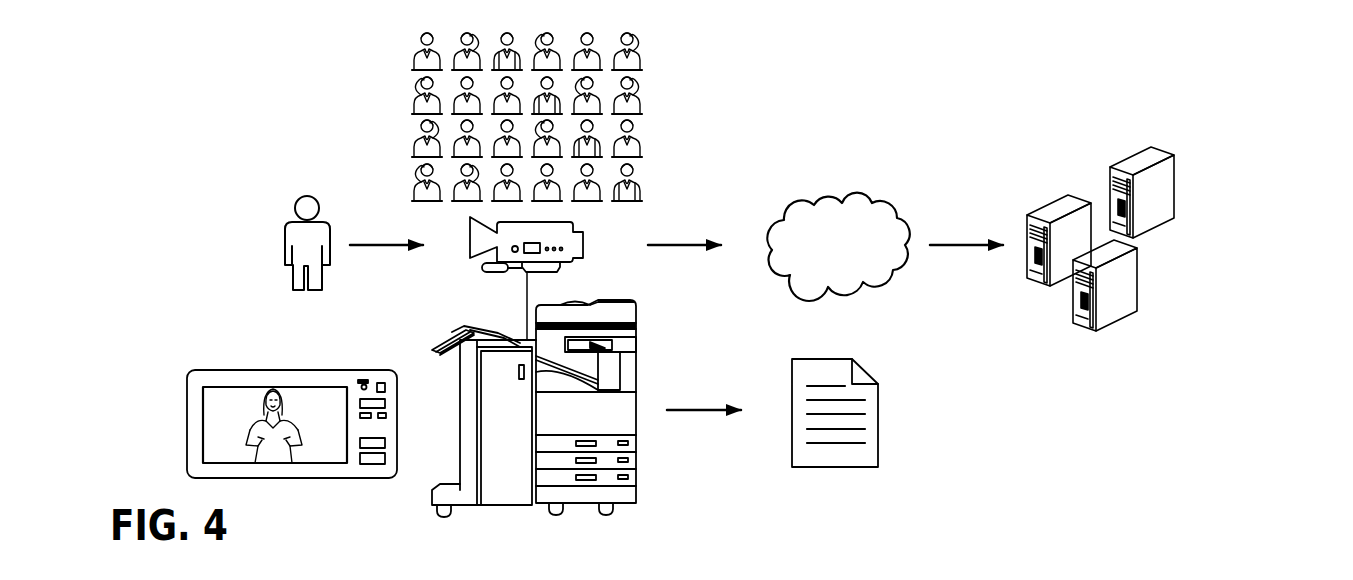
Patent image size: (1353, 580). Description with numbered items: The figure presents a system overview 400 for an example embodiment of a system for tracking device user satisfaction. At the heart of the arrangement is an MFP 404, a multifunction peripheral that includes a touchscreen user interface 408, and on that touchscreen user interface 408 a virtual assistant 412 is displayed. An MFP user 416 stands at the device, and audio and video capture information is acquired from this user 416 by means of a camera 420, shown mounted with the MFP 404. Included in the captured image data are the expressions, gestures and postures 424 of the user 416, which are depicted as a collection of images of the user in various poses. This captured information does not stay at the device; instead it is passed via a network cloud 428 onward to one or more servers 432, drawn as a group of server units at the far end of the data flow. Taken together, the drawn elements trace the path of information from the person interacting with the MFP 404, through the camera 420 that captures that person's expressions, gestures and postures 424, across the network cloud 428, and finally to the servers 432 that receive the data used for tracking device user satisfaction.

The system overview 400 is at (1018, 115).
The MFP 404 is at (500, 505).
The touchscreen user interface 408 is at (337, 470).
The virtual assistant 412 is at (249, 400).
The MFP user 416 is at (322, 270).
The camera 420 is at (583, 245).
The expressions, gestures and postures 424 is at (680, 106).
The network cloud 428 is at (870, 198).
The servers 432 is at (1180, 238).